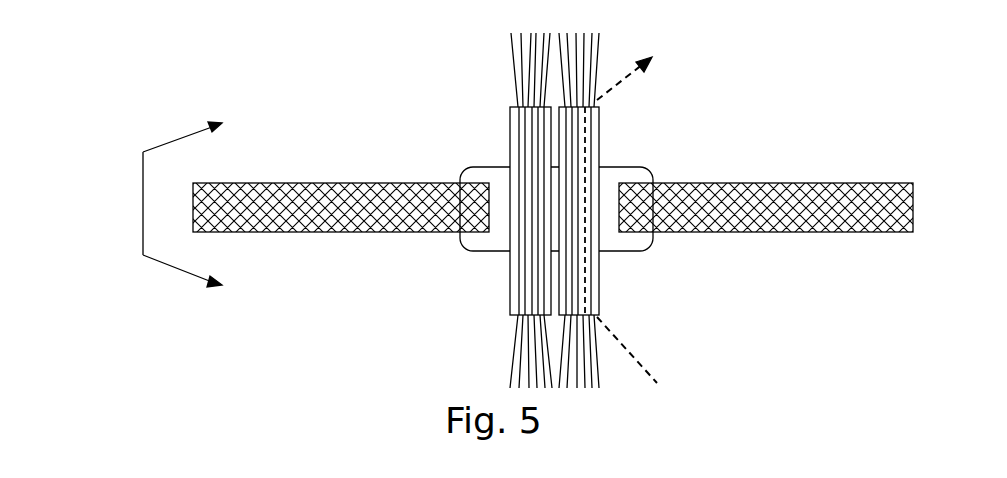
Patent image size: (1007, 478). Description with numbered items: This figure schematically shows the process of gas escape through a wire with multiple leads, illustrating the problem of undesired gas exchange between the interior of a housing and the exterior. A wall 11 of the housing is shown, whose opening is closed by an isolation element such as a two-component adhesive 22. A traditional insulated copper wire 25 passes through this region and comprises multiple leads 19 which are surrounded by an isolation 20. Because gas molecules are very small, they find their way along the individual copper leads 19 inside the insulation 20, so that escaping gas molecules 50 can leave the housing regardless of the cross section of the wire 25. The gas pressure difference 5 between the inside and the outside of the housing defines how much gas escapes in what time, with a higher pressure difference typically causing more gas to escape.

The gas pressure difference 5 is at (143, 196).
The wall 11 is at (847, 192).
The leads 19 is at (598, 52).
The isolation 20 is at (588, 258).
The two-component adhesive 22 is at (623, 175).
The insulated copper wire 25 is at (502, 93).
The escaping gas molecules 50 is at (637, 358).